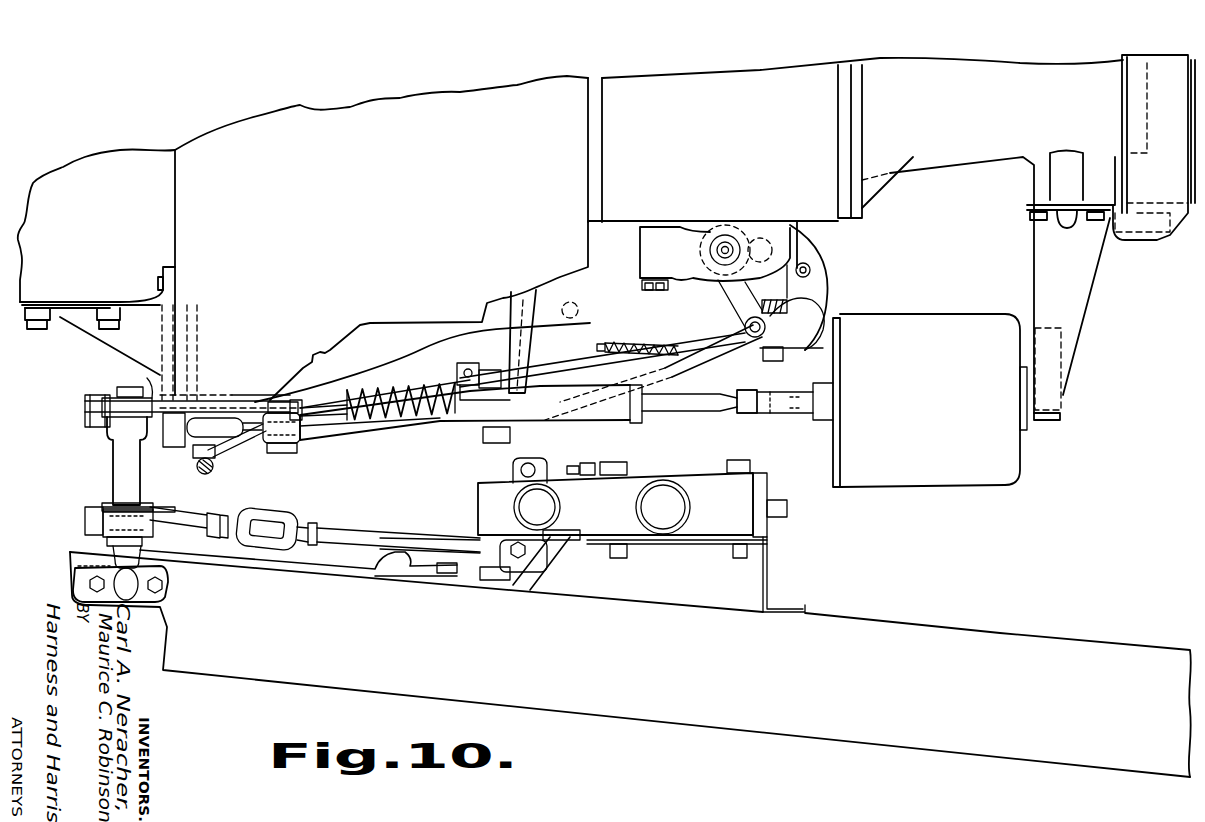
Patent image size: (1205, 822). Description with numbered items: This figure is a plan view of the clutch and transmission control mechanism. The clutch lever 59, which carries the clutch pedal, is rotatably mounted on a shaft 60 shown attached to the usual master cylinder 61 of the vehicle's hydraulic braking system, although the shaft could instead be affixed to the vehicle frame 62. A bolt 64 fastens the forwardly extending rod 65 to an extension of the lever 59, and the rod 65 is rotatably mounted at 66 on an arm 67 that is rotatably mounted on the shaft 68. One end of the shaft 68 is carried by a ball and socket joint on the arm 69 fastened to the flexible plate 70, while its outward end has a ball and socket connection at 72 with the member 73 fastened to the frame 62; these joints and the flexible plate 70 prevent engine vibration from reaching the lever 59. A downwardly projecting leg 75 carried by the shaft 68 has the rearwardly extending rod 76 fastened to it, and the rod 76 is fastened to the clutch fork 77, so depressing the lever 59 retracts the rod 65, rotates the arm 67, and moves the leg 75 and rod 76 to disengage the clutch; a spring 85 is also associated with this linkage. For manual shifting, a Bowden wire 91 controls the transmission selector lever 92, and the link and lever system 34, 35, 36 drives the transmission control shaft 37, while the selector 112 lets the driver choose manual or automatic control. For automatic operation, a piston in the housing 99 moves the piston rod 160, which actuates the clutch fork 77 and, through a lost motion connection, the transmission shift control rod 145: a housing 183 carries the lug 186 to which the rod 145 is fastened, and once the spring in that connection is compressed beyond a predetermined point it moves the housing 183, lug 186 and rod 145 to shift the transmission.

The transmission control shaft 37 is at (728, 238).
The selector 112 is at (812, 272).
The transmission selector lever 92 is at (800, 352).
The Bowden wire 91 is at (628, 343).
The transmission shift control rod 145 is at (592, 378).
The clutch fork 77 is at (527, 352).
The lug 186 is at (455, 368).
The rod 76 is at (385, 392).
The housing 183 is at (603, 424).
The link and lever system member 36 is at (665, 391).
The piston rod 160 is at (300, 420).
The spring 85 is at (340, 420).
The housing 99 is at (968, 486).
The flexible plate 70 is at (240, 398).
The arm 69 is at (148, 385).
The leg 75 is at (84, 420).
The shaft 68 is at (142, 476).
The rotatable mounting 66 is at (100, 505).
The arm 67 is at (105, 538).
The member 73 is at (148, 549).
The ball and socket connection 72 is at (78, 562).
The link and lever system member 35 is at (260, 452).
The link and lever system member 34 is at (213, 474).
The rod 65 is at (346, 533).
The bolt 64 is at (443, 536).
The lever 59 is at (387, 580).
The master cylinder 61 is at (580, 476).
The shaft 60 is at (520, 582).
The frame 62 is at (668, 606).